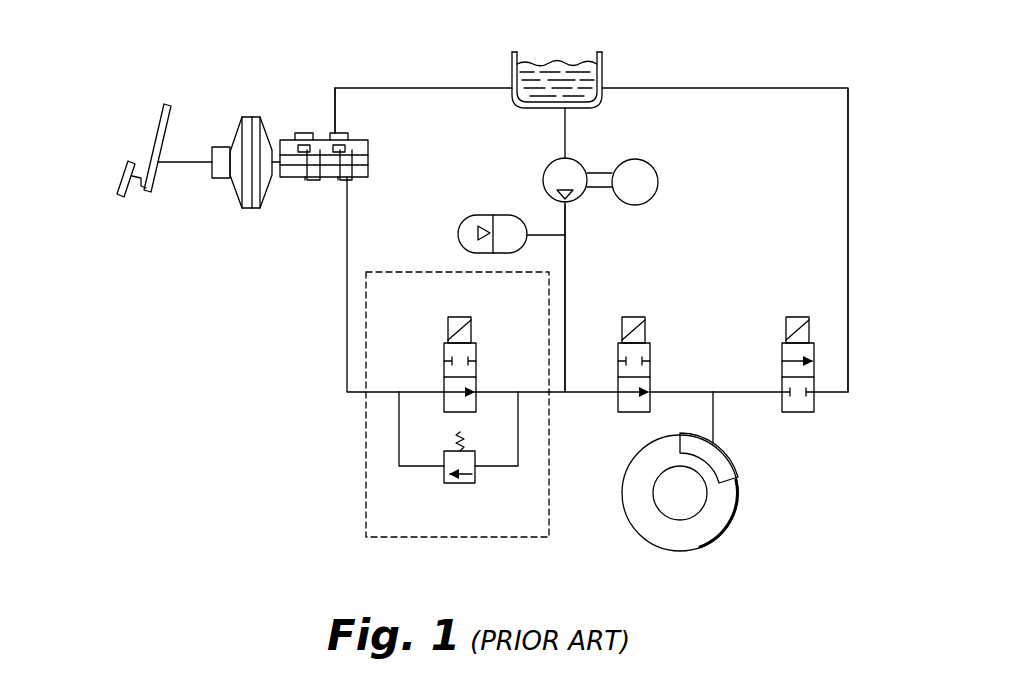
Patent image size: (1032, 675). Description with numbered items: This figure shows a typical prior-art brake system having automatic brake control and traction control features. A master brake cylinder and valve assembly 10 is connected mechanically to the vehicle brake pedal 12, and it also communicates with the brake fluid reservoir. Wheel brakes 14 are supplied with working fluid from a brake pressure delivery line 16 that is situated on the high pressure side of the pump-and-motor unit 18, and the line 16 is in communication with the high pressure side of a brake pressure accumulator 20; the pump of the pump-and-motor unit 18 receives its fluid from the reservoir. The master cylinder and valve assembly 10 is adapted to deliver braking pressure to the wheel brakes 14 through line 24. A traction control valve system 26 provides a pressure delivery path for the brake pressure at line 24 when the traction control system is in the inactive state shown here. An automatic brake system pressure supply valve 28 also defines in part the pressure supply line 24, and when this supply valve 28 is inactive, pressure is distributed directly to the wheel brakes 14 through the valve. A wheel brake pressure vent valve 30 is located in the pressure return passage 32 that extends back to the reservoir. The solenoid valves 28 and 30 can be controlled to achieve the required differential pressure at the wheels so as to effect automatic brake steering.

The master brake cylinder and valve assembly 10 is at (287, 200).
The vehicle brake pedal 12 is at (156, 141).
The wheel brakes 14 is at (743, 471).
The brake pressure delivery line 16 is at (567, 268).
The pump-and-motor unit 18 is at (600, 193).
The brake pressure accumulator 20 is at (493, 211).
The line 24 is at (347, 327).
The traction control valve system 26 is at (366, 458).
The automatic brake system pressure supply valve 28 is at (652, 361).
The wheel brake pressure vent valve 30 is at (782, 361).
The pressure return passage 32 is at (607, 70).